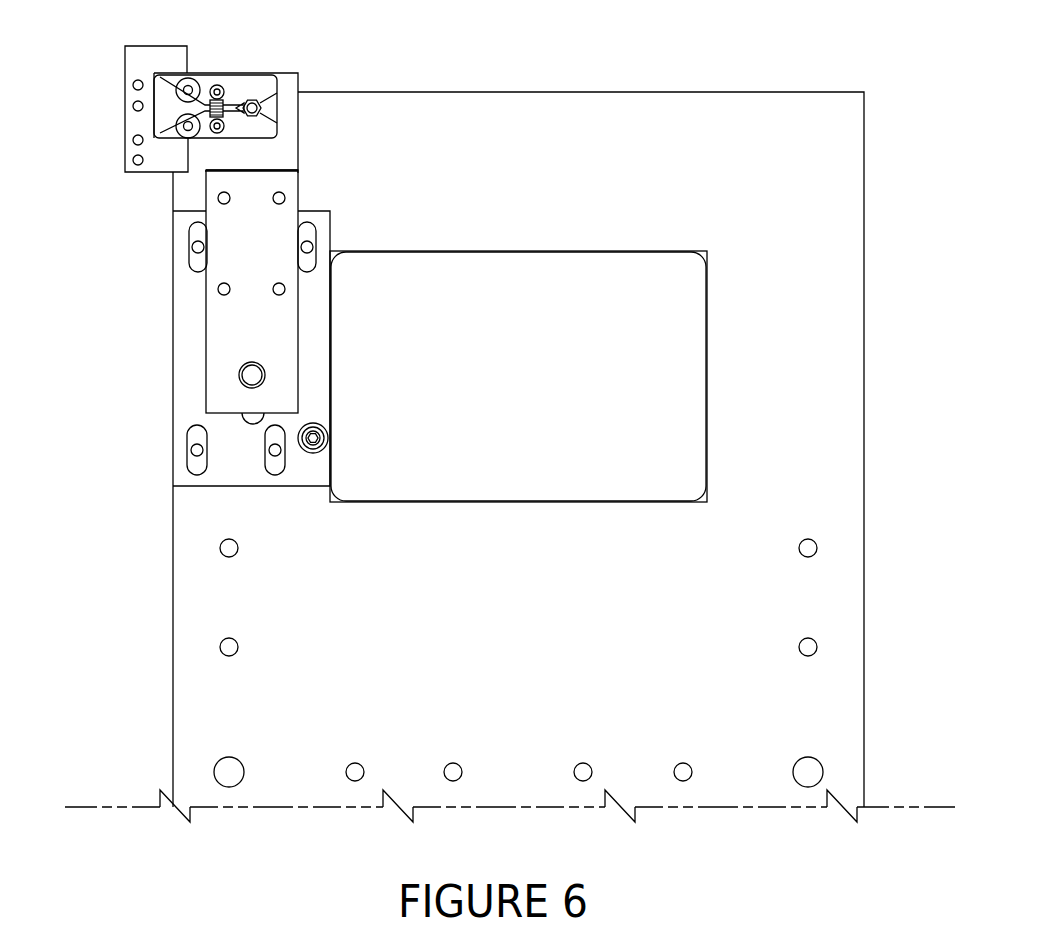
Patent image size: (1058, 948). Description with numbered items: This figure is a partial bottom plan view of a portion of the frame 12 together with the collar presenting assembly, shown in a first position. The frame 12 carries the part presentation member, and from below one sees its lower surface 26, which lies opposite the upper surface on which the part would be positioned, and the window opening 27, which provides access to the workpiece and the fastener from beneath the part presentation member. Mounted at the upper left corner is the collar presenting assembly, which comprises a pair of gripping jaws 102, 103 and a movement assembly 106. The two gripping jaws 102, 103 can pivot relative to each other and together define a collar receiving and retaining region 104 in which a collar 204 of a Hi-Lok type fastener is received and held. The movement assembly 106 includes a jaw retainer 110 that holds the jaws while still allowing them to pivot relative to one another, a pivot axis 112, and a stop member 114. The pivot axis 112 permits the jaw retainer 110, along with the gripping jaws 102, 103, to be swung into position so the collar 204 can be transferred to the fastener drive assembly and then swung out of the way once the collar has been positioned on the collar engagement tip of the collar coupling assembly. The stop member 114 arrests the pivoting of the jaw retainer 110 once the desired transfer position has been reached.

The frame 12 is at (640, 93).
The lower surface 26 is at (527, 681).
The window opening 27 is at (523, 266).
The gripping jaw 102 is at (265, 133).
The gripping jaw 103 is at (263, 78).
The collar receiving and retaining region 104 is at (259, 104).
The movement assembly 106 is at (206, 295).
The jaw retainer 110 is at (294, 100).
The pivot axis 112 is at (237, 382).
The stop member 114 is at (298, 438).
The collar 204 is at (250, 106).